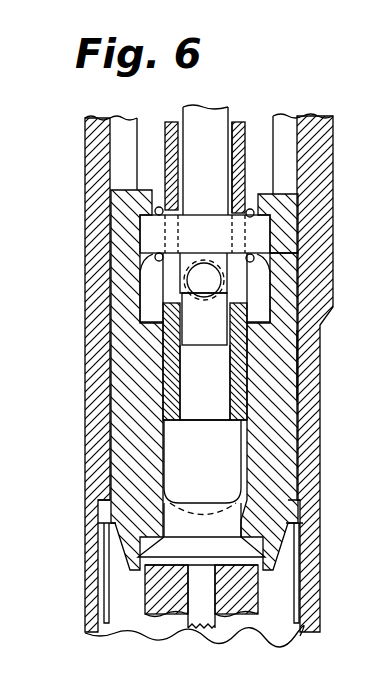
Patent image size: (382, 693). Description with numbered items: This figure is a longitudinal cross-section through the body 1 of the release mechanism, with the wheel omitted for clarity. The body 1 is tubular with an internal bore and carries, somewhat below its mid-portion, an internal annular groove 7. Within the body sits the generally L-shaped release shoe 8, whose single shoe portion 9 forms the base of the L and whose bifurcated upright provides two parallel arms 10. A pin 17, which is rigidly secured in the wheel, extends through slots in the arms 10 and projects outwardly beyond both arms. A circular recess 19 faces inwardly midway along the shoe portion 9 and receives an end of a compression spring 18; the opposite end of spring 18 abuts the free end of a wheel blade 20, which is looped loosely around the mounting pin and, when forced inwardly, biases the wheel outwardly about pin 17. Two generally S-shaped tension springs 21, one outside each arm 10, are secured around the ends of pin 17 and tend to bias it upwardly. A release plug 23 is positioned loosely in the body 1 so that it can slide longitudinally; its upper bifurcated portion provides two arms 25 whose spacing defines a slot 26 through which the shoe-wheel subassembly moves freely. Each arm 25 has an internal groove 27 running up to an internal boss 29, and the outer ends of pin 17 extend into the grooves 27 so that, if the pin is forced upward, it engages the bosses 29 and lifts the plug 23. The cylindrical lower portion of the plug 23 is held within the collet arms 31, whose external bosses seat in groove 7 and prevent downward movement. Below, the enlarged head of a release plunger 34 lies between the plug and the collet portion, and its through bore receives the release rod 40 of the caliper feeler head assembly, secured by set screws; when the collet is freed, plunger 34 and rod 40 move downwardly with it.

The body 1 is at (335, 132).
The internal annular groove 7 is at (292, 532).
The release shoe 8 is at (232, 127).
The shoe portion 9 is at (190, 408).
The arms 10 is at (172, 405).
The pin 17 is at (270, 236).
The compression spring 18 is at (225, 281).
The circular recess 19 is at (203, 294).
The wheel blade 20 is at (202, 123).
The tension springs 21 is at (160, 207).
The release plug 23 is at (298, 362).
The arms 25 is at (127, 367).
The slot 26 is at (237, 460).
The internal groove 27 is at (262, 303).
The internal bosses 29 is at (288, 205).
The collet arms 31 is at (100, 540).
The release plunger 34 is at (240, 605).
The release rod 40 is at (203, 627).